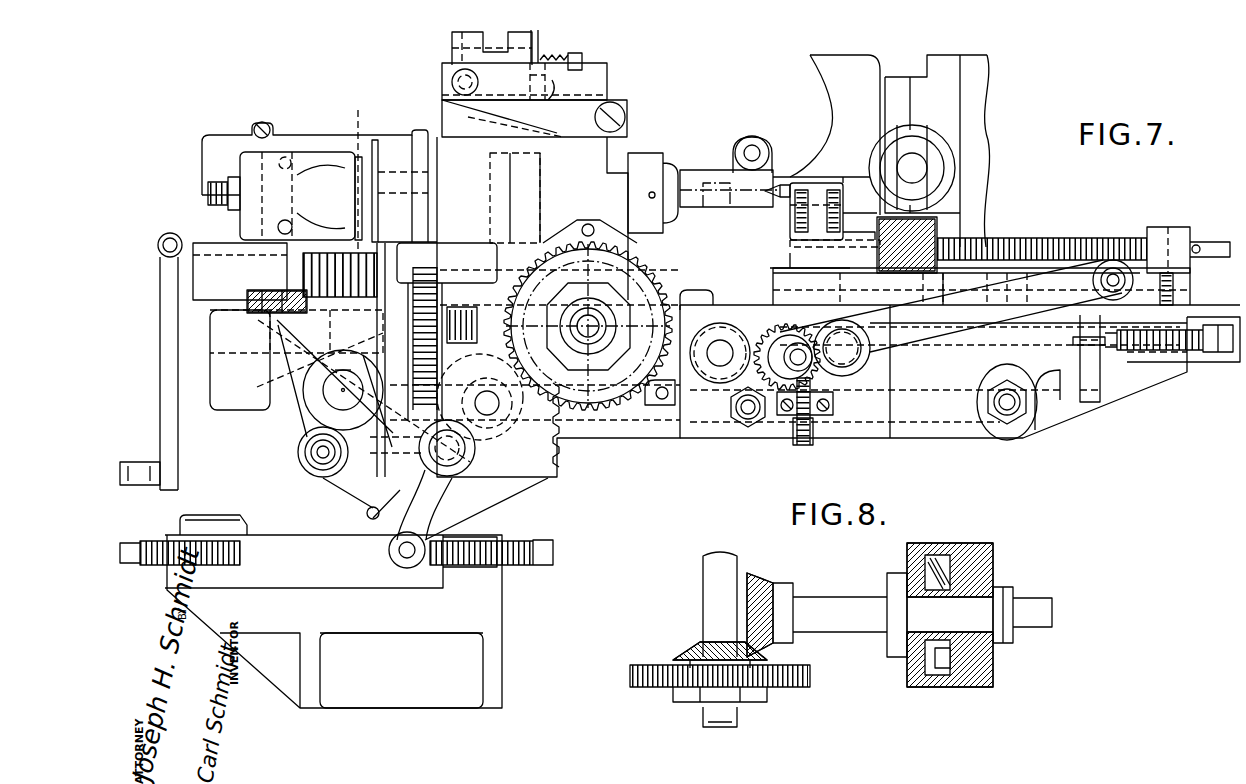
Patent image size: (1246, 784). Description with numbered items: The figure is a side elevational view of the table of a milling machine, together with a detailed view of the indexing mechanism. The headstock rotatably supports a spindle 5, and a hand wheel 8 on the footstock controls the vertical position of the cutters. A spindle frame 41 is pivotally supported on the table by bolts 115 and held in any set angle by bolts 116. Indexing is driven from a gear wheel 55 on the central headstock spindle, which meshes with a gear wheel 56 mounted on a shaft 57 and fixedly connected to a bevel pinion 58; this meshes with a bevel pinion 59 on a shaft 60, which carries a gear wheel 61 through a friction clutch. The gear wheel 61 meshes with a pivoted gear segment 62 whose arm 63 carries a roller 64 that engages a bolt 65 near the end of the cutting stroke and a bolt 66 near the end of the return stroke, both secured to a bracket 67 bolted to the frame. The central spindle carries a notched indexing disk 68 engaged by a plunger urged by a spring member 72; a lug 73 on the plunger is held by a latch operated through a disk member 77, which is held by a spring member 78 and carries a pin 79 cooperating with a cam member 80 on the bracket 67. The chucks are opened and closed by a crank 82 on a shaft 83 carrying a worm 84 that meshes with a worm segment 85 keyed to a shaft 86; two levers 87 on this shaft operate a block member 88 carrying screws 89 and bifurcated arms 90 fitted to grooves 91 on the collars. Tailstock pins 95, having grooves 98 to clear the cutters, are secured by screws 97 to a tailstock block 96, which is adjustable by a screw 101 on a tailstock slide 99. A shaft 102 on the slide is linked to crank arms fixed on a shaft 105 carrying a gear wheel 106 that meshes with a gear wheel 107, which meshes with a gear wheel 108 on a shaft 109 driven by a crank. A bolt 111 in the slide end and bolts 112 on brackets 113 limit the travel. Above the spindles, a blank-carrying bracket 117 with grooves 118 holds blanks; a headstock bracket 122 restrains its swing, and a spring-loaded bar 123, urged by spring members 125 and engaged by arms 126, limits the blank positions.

In FIG. 7, the spindle 5 is at (915, 165).
In FIG. 7, the hand wheel 8 is at (670, 290).
In FIG. 7, the spindle frame 41 is at (1083, 405).
In FIG. 7, the gear wheel 55 is at (480, 126).
In FIG. 7, the gear wheel 56 is at (550, 243).
In FIG. 8, the gear wheel 56 is at (630, 680).
In FIG. 8, the shaft 57 is at (730, 568).
In FIG. 8, the bevel pinion 58 is at (690, 650).
In FIG. 8, the bevel pinion 59 is at (780, 580).
In FIG. 8, the shaft 60 is at (826, 600).
In FIG. 7, the gear wheel 61 is at (600, 395).
In FIG. 8, the gear wheel 61 is at (945, 545).
In FIG. 7, the gear segment 62 is at (550, 460).
In FIG. 7, the arm 63 is at (440, 505).
In FIG. 7, the roller 64 is at (393, 553).
In FIG. 7, the bolt 65 is at (543, 542).
In FIG. 7, the bolt 66 is at (232, 560).
In FIG. 7, the bracket 67 is at (285, 675).
In FIG. 7, the indexing disk 68 is at (418, 130).
In FIG. 7, the spring member 72 is at (450, 255).
In FIG. 7, the lug 73 is at (300, 432).
In FIG. 7, the disk member 77 is at (345, 488).
In FIG. 7, the spring member 78 is at (300, 455).
In FIG. 7, the pin 79 is at (365, 513).
In FIG. 7, the cam member 80 is at (230, 520).
In FIG. 7, the crank 82 is at (176, 475).
In FIG. 7, the shaft 83 is at (166, 250).
In FIG. 7, the worm 84 is at (378, 215).
In FIG. 7, the worm segment 85 is at (285, 350).
In FIG. 7, the shaft 86 is at (305, 400).
In FIG. 7, the levers 87 is at (280, 380).
In FIG. 7, the block member 88 is at (270, 262).
In FIG. 7, the screws 89 is at (250, 300).
In FIG. 7, the bifurcated arms 90 is at (355, 203).
In FIG. 7, the grooves 91 is at (362, 133).
In FIG. 7, the tailstock pins 95 is at (757, 195).
In FIG. 7, the tailstock block 96 is at (865, 232).
In FIG. 7, the screws 97 is at (801, 192).
In FIG. 7, the grooves 98 is at (836, 185).
In FIG. 7, the tailstock slide 99 is at (790, 265).
In FIG. 7, the screw 101 is at (995, 238).
In FIG. 7, the shaft 102 is at (1105, 262).
In FIG. 7, the shaft 105 is at (890, 350).
In FIG. 7, the gear wheel 106 is at (848, 325).
In FIG. 7, the gear wheel 107 is at (800, 340).
In FIG. 7, the gear wheel 108 is at (765, 335).
In FIG. 7, the shaft 109 is at (722, 340).
In FIG. 7, the bolt 111 is at (1225, 355).
In FIG. 7, the bolts 112 is at (800, 445).
In FIG. 7, the brackets 113 is at (828, 428).
In FIG. 7, the bolts 115 is at (745, 425).
In FIG. 7, the bolts 116 is at (495, 460).
In FIG. 7, the blank-carrying bracket 117 is at (610, 92).
In FIG. 7, the grooves 118 is at (458, 40).
In FIG. 7, the bracket 122 is at (832, 64).
In FIG. 7, the bar 123 is at (540, 40).
In FIG. 7, the spring members 125 is at (585, 63).
In FIG. 7, the arms 126 is at (562, 56).